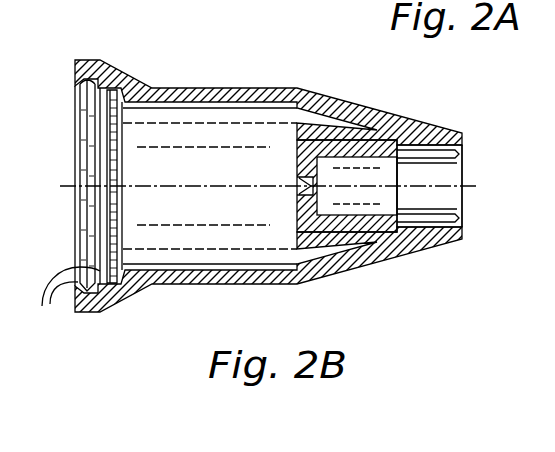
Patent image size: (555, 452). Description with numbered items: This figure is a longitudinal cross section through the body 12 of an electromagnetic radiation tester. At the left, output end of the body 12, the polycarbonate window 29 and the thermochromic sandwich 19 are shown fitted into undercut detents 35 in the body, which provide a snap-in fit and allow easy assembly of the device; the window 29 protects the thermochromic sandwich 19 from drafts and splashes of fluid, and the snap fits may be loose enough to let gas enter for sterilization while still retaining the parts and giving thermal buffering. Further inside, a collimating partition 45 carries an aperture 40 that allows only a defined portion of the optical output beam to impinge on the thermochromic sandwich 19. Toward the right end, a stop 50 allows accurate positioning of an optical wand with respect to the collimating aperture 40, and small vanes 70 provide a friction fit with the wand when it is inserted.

The body 12 is at (284, 88).
The thermochromic element sandwich 19 is at (116, 88).
The polycarbonate window 29 is at (88, 103).
The undercut detents 35 is at (66, 298).
The aperture 40 is at (318, 188).
The collimating partition 45 is at (297, 216).
The stop 50 is at (400, 218).
The small vanes 70 is at (458, 162).